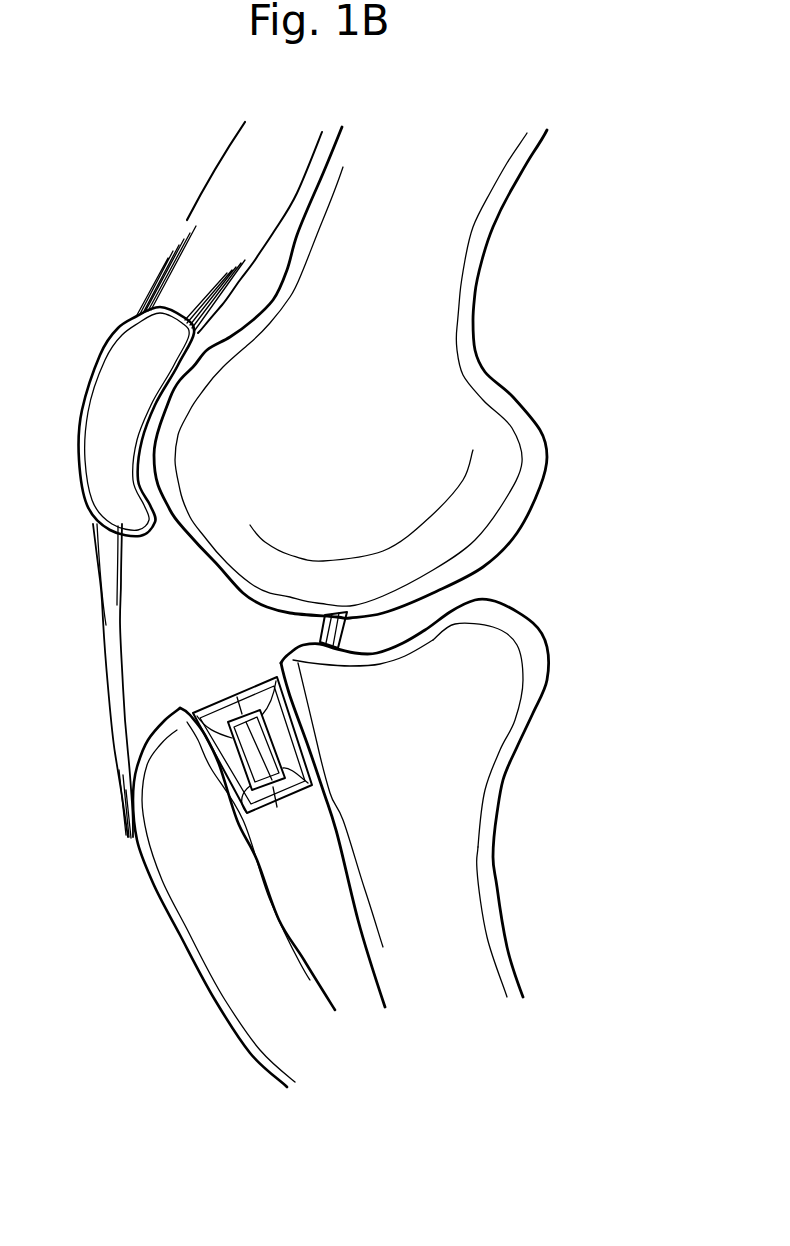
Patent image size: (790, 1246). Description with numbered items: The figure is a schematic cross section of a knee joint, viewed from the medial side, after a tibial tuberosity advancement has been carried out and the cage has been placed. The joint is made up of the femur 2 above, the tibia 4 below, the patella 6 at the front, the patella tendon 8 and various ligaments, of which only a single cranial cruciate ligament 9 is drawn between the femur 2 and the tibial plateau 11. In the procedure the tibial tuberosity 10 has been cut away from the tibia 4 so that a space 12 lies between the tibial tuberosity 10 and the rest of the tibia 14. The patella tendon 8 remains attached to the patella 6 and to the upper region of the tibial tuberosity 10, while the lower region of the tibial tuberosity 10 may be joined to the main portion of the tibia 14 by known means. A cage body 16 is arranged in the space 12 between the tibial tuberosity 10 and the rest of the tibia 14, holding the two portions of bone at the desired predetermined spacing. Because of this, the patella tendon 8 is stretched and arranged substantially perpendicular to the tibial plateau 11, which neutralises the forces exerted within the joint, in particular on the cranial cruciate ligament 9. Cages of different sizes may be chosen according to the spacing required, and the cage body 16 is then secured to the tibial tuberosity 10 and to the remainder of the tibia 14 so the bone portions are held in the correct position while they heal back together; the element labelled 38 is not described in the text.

The femur 2 is at (370, 352).
The tibia 4 is at (550, 917).
The patella 6 is at (132, 410).
The patella tendon 8 is at (110, 650).
The cruciate ligament 9 is at (320, 630).
The tibial tuberosity 10 is at (235, 945).
The tibial plateau 11 is at (413, 634).
The space 12 is at (316, 862).
The rest of the tibia 14 is at (432, 810).
The cage body 16 is at (297, 780).
The strap slider 38 is at (250, 758).